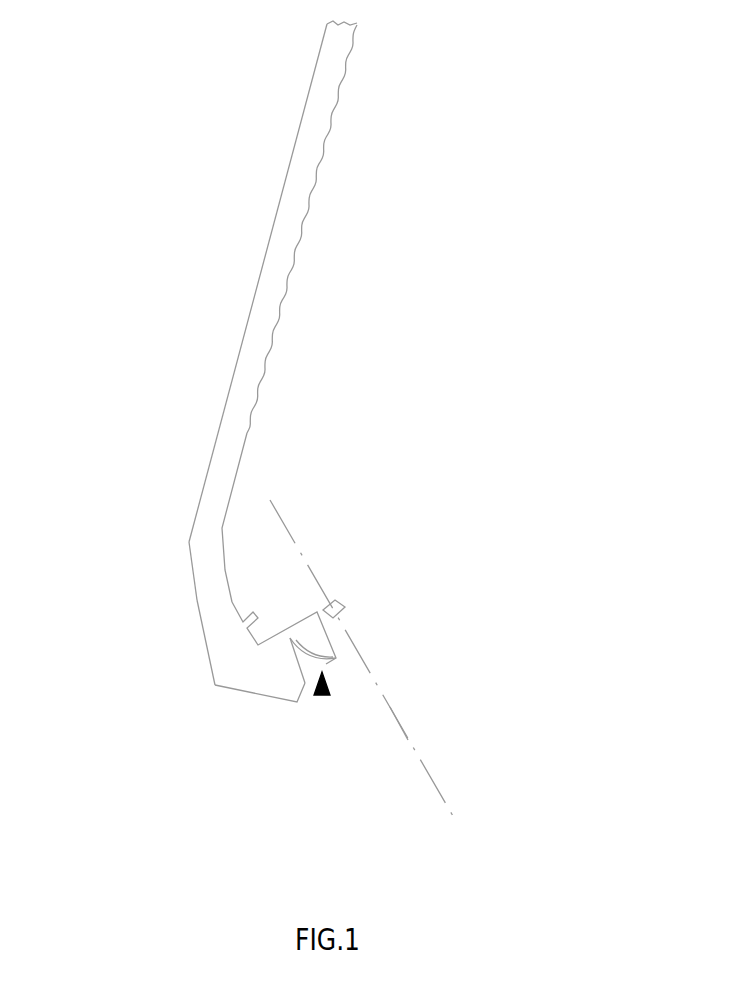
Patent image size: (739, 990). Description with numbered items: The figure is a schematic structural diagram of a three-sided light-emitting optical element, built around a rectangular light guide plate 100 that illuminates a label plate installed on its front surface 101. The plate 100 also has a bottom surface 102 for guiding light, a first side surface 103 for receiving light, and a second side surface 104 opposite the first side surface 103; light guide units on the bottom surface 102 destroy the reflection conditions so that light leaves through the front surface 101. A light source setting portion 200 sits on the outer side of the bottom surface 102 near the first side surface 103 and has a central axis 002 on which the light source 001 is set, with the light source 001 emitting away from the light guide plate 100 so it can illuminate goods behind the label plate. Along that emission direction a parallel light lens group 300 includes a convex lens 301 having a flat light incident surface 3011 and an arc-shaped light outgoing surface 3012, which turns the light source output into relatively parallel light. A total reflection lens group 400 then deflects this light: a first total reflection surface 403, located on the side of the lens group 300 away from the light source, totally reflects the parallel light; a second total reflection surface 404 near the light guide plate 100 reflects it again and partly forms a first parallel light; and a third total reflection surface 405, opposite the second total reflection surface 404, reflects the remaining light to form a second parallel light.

The rectangular light guide plate 100 is at (199, 311).
The front surface 101 is at (287, 178).
The bottom surface 102 is at (282, 308).
The first side surface 103 is at (195, 479).
The second side surface 104 is at (357, 23).
The light source setting portion 200 is at (338, 622).
The parallel light lens group 300 is at (323, 697).
The convex lens 301 is at (391, 681).
The flat light incident surface 3011 is at (330, 638).
The arc-shaped light outgoing surface 3012 is at (327, 670).
The total reflection lens group 400 is at (199, 736).
The first total reflection surface 403 is at (247, 695).
The second total reflection surface 404 is at (203, 657).
The third total reflection surface 405 is at (232, 595).
The light source 001 is at (323, 590).
The central axis 002 is at (413, 743).